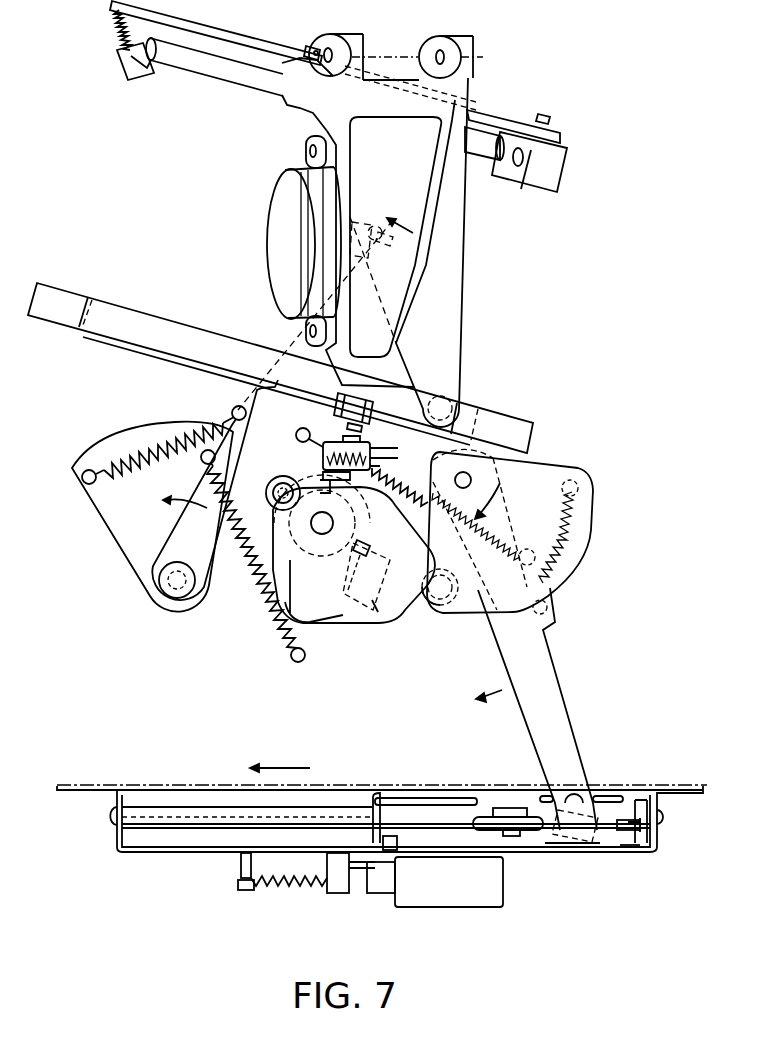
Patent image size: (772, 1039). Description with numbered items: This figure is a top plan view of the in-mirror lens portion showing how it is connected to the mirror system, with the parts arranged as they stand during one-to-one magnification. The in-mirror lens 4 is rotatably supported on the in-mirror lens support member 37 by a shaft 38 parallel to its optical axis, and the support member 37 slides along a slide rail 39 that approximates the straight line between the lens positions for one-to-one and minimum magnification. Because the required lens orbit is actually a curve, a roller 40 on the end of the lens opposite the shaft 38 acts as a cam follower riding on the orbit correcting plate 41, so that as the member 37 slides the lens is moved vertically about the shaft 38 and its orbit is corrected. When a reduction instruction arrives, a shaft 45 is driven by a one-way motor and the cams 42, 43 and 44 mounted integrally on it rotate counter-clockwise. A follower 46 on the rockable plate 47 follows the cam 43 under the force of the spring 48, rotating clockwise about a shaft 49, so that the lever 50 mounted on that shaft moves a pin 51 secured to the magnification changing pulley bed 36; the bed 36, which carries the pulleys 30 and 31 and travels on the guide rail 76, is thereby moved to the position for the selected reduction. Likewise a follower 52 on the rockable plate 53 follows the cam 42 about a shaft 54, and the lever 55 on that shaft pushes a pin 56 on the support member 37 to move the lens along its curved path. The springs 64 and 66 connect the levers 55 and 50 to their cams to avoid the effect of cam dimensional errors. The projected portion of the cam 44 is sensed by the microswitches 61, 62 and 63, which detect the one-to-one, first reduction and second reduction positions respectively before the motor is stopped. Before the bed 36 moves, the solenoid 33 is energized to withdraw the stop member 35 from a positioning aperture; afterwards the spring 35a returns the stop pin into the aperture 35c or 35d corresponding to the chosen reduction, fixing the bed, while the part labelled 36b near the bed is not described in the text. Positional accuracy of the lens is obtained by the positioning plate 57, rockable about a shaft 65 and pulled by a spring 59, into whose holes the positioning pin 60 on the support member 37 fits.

The in-mirror lens 4 is at (270, 231).
The pulley 30 is at (638, 828).
The pulley 31 is at (532, 826).
The solenoid 33 is at (475, 905).
The stop member 35 is at (400, 841).
The spring 35a is at (277, 893).
The positioning aperture 35c is at (563, 843).
The positioning aperture 35d is at (628, 847).
The magnification changing pulley bed 36 is at (597, 841).
The slide bar 36b is at (390, 840).
The in-mirror lens support member 37 is at (462, 285).
The shaft 38 is at (410, 56).
The slide rail 39 is at (227, 72).
The roller 40 is at (380, 415).
The orbit correcting plate 41 is at (463, 410).
The cam 42 is at (331, 618).
The cam 43 is at (407, 610).
The cam 44 is at (370, 535).
The shaft 45 is at (322, 534).
The follower 46 is at (441, 608).
The rockable plate 47 is at (592, 520).
The spring 48 is at (489, 520).
The shaft 49 is at (470, 480).
The lever 50 is at (560, 683).
The pin 51 is at (583, 832).
The follower 52 is at (272, 480).
The rockable plate 53 is at (107, 531).
The shaft 54 is at (158, 593).
The lever 55 is at (177, 533).
The pin 56 is at (373, 219).
The positioning plate 57 is at (496, 110).
The spring 59 is at (117, 28).
The positioning pin 60 is at (311, 48).
The microswitch 61 is at (398, 449).
The microswitch 62 is at (262, 567).
The microswitch 63 is at (376, 614).
The spring 64 is at (150, 443).
The shaft 65 is at (546, 115).
The spring 66 is at (568, 550).
The guide rail 76 is at (208, 813).